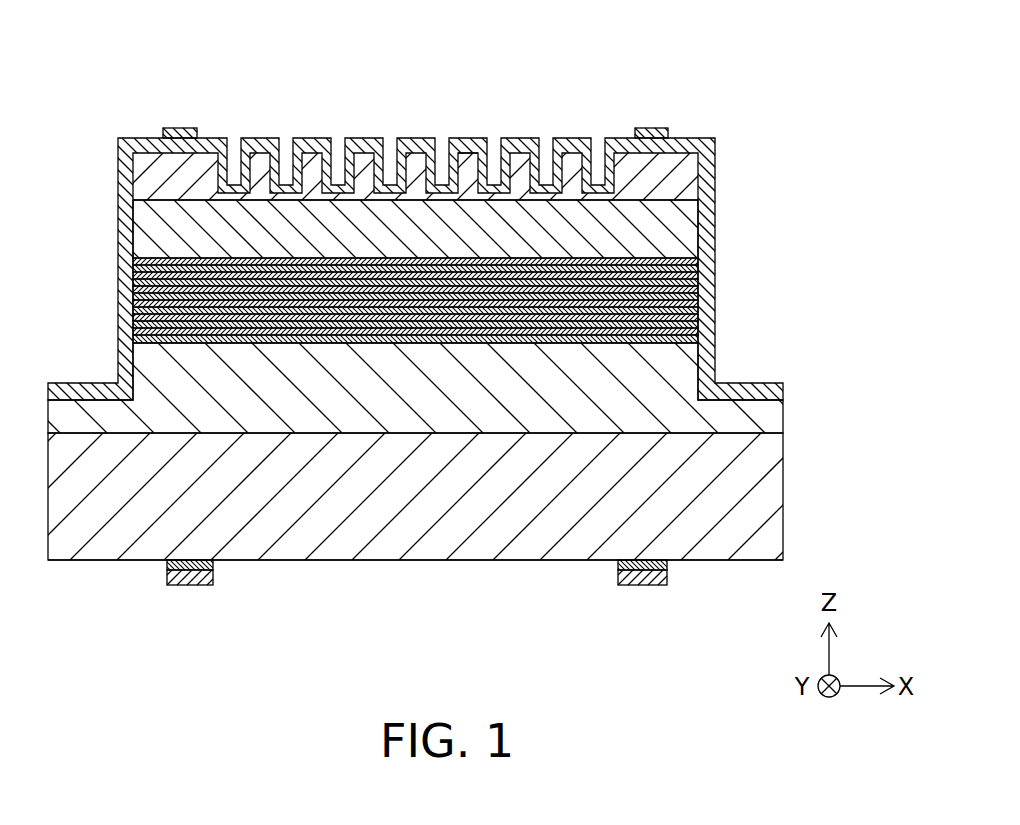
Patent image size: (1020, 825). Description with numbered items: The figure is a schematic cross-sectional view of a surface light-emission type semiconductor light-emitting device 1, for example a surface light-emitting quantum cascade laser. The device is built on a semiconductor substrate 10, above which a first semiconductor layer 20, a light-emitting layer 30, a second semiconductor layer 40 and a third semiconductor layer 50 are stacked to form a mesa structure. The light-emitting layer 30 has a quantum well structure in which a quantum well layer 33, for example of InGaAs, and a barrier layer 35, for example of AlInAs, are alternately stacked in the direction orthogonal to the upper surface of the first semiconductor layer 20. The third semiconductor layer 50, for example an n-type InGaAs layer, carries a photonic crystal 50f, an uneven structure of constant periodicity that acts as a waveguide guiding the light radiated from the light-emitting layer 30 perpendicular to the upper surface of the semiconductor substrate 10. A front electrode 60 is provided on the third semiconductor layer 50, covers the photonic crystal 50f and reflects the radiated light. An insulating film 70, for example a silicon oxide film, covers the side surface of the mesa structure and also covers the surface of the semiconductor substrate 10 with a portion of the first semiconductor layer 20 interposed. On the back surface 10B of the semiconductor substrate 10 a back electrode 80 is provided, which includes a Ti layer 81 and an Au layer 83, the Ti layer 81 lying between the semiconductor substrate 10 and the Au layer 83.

The semiconductor light-emitting device 1 is at (742, 90).
The semiconductor substrate 10 is at (752, 510).
The back surface 10B is at (107, 565).
The first semiconductor layer 20 is at (760, 415).
The light-emitting layer 30 is at (788, 250).
The quantum well layer 33 is at (682, 308).
The barrier layer 35 is at (692, 276).
The second semiconductor layer 40 is at (670, 220).
The third semiconductor layer 50 is at (680, 172).
The photonic crystal 50f is at (472, 156).
The front electrode 60 is at (652, 124).
The insulating film 70 is at (116, 216).
The back electrode 80 is at (479, 611).
The Ti layer 81 is at (662, 570).
The Au layer 83 is at (647, 590).